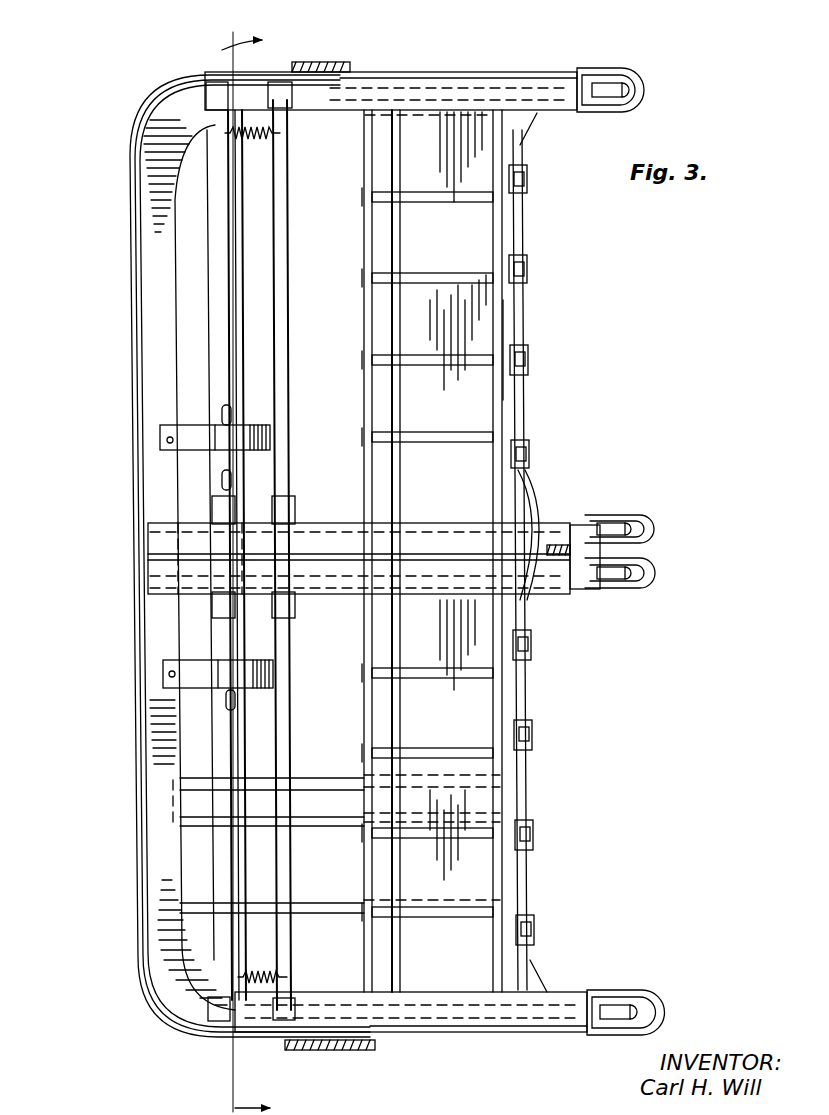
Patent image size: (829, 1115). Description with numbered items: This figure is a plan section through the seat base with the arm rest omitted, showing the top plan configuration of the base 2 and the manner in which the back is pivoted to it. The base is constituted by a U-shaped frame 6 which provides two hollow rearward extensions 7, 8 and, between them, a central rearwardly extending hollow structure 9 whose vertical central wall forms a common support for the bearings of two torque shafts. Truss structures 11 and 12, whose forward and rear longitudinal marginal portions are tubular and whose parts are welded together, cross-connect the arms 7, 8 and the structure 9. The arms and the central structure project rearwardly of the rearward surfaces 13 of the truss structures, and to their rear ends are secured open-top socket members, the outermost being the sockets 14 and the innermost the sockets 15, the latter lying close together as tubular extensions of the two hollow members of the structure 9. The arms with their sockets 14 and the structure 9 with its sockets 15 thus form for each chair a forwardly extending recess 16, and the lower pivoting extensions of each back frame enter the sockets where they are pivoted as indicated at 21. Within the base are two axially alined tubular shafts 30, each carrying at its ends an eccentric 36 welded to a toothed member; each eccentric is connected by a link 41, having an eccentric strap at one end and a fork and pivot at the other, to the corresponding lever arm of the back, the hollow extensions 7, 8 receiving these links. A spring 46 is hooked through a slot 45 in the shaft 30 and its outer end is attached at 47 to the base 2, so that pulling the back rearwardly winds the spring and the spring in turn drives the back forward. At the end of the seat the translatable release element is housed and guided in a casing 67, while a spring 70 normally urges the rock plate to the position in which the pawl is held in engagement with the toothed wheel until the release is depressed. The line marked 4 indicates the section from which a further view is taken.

The base 2 is at (128, 575).
The section line 4 is at (234, 572).
The U-shaped frame 6 is at (158, 842).
The rearward extension 7 is at (372, 85).
The rearward extension 8 is at (410, 1040).
The central rearwardly extending hollow structure 9 is at (415, 545).
The truss structure 11 is at (484, 328).
The truss structure 12 is at (490, 800).
The rearward surface 13 is at (527, 418).
The outermost socket member 14 is at (650, 105).
The innermost socket member 15 is at (655, 566).
The forwardly extending recess 16 is at (578, 345).
The pivot 21 is at (612, 93).
The shaft 30 is at (215, 345).
The eccentric 36 is at (258, 97).
The link 41 is at (443, 93).
The slot 45 is at (225, 413).
The spring 46 is at (195, 437).
The spring attachment 47 is at (167, 440).
The casing 67 is at (325, 65).
The spring 70 is at (250, 137).